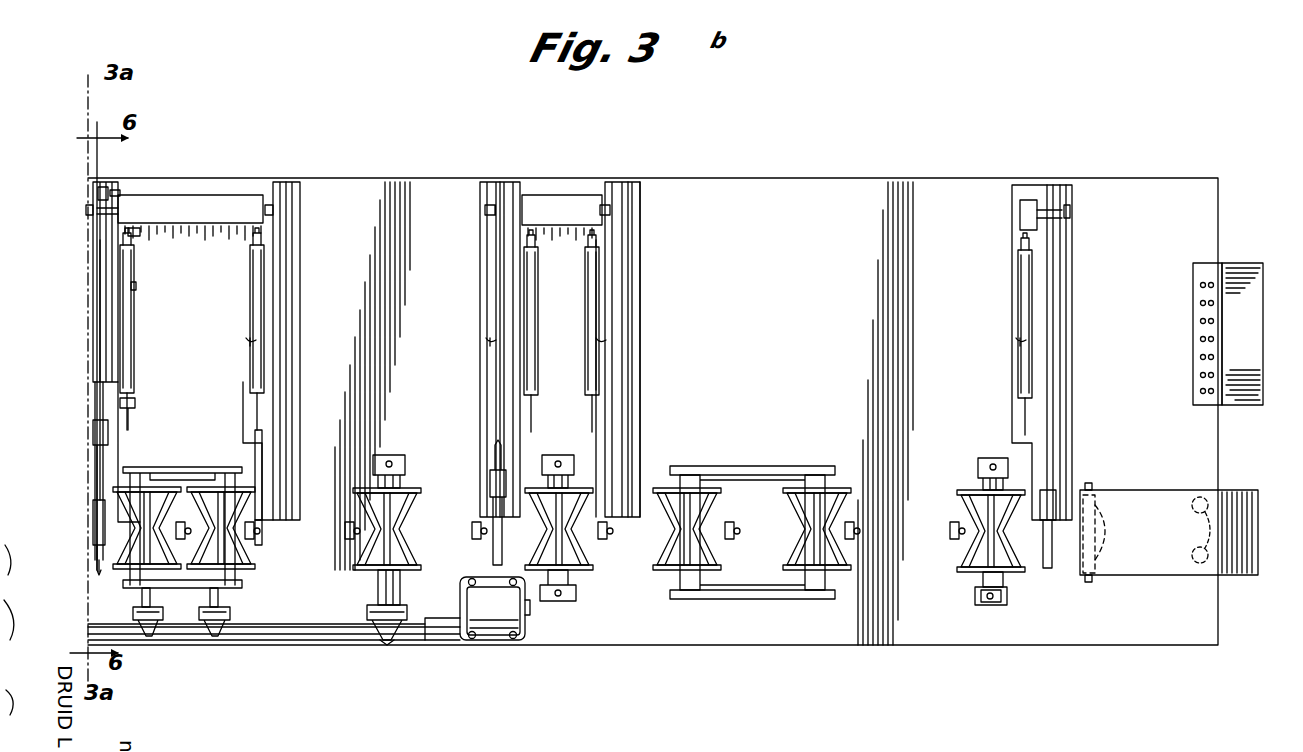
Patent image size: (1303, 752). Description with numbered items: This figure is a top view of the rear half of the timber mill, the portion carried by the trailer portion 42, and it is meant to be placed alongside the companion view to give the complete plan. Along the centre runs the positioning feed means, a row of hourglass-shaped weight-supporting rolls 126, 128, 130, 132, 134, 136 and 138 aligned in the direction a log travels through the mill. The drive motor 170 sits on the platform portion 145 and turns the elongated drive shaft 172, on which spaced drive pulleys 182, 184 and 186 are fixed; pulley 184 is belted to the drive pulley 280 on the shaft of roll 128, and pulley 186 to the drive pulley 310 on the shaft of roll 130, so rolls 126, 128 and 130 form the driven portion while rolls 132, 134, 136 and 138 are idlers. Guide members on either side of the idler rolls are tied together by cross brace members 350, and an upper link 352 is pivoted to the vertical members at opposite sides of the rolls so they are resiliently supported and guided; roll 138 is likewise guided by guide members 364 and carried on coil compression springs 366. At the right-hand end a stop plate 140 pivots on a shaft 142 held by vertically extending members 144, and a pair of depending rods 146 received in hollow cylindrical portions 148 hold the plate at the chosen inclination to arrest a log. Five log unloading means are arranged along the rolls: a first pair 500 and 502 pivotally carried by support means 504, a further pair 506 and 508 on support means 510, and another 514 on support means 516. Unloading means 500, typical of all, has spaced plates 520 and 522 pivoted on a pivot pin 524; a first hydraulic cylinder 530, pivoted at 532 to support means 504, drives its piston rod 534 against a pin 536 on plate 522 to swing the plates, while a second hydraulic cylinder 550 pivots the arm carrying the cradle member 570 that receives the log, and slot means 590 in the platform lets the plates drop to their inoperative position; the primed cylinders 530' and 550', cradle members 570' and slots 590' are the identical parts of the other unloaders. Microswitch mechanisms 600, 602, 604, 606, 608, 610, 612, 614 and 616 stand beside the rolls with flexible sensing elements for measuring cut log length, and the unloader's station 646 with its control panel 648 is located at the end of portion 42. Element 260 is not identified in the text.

The trailer portion 42 is at (854, 174).
The weight-supporting roll 126 is at (165, 468).
The weight-supporting roll 128 is at (195, 470).
The weight-supporting roll 130 is at (346, 475).
The weight-supporting roll 132 is at (528, 480).
The weight-supporting roll 134 is at (719, 480).
The weight-supporting roll 136 is at (852, 470).
The weight-supporting roll 138 is at (955, 485).
The stop plate 140 is at (1168, 553).
The shaft 142 is at (1089, 584).
The vertically extending members 144 is at (1093, 505).
The platform portion 145 is at (822, 262).
The depending rods 146 is at (1196, 495).
The hollow cylindrical portions 148 is at (1201, 553).
The drive motor 170 is at (496, 620).
The drive shaft 172 is at (319, 633).
The drive pulley 182 is at (135, 640).
The drive pulley 184 is at (203, 643).
The drive pulley 186 is at (378, 640).
The supply line 260 is at (135, 612).
The drive pulley 280 is at (175, 630).
The drive pulley 310 is at (370, 618).
The cross brace members 350 is at (786, 466).
The upper link 352 is at (748, 474).
The guide members 364 is at (1006, 598).
The coil compression springs 366 is at (981, 598).
The log unloading means 500 is at (126, 184).
The log unloading means 502 is at (268, 190).
The support means 504 is at (214, 219).
The log unloading means 506 is at (475, 190).
The log unloading means 508 is at (646, 190).
The support means 510 is at (584, 218).
The log unloading means 514 is at (1078, 196).
The support means 516 is at (1021, 217).
The plate 520 is at (100, 185).
The plate 522 is at (119, 192).
The pivot pin 524 is at (110, 211).
The first hydraulic cylinder 530 is at (151, 329).
The first hydraulic cylinder 530' is at (618, 398).
The pivotal support 532 is at (138, 238).
The piston rod 534 is at (135, 400).
The pin 536 is at (92, 428).
The hydraulic cylinder 550 is at (141, 370).
The hydraulic cylinder 550' is at (709, 351).
The cradle member 570 is at (68, 565).
The cradle member 570' is at (281, 560).
The slot means 590 is at (159, 283).
The slot means 590' is at (606, 359).
The microswitch mechanism 600 is at (92, 538).
The microswitch mechanism 602 is at (188, 527).
The microswitch mechanism 604 is at (254, 536).
The microswitch mechanism 606 is at (343, 536).
The microswitch mechanism 608 is at (473, 536).
The microswitch mechanism 610 is at (599, 545).
The microswitch mechanism 612 is at (729, 540).
The microswitch mechanism 614 is at (850, 540).
The microswitch mechanism 616 is at (953, 537).
The unloader's station 646 is at (1245, 405).
The control panel 648 is at (1197, 406).